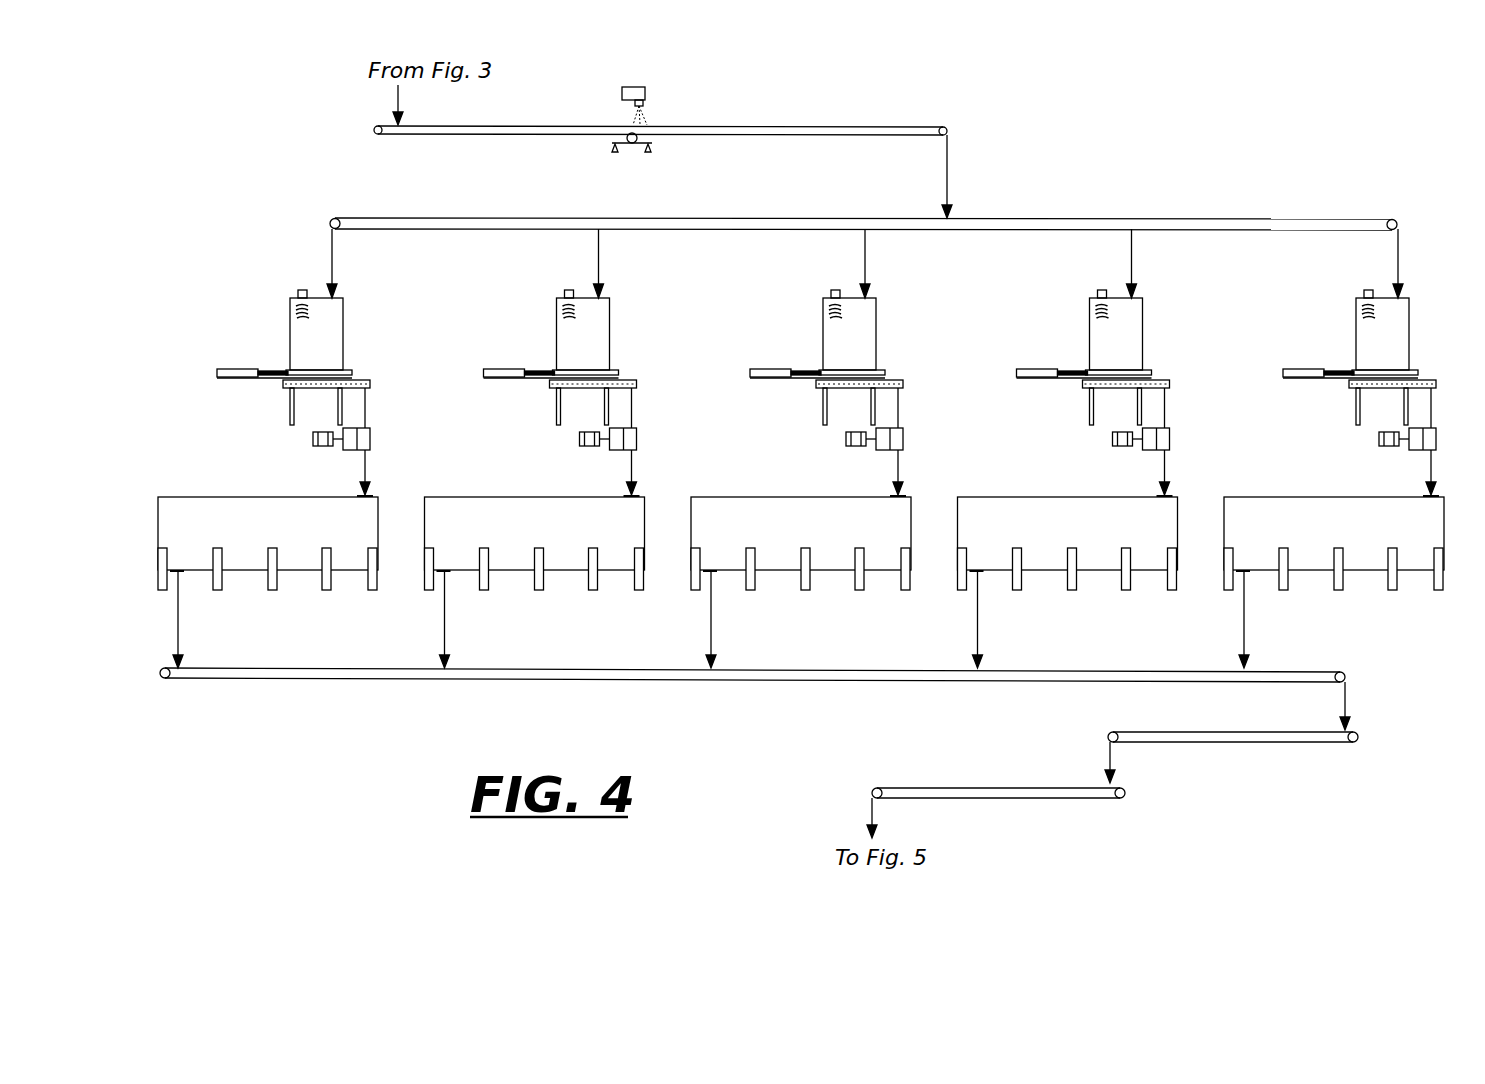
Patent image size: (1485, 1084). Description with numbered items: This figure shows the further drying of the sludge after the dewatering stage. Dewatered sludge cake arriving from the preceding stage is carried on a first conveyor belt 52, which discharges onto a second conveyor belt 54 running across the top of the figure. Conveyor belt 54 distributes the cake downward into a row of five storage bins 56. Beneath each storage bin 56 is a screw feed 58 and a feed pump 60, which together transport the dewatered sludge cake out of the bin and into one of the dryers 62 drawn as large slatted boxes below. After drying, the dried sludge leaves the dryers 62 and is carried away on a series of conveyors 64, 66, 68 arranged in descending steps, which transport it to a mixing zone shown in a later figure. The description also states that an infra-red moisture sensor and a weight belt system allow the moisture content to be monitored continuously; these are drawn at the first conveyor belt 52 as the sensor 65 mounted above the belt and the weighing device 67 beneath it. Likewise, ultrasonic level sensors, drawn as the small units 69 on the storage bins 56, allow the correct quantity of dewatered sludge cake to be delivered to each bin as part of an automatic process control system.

The conveyor belt 52 is at (890, 126).
The conveyor belt 54 is at (890, 222).
The storage bin 56 is at (343, 333).
The screw feed 58 is at (372, 382).
The feed pump 60 is at (372, 435).
The dryer 62 is at (227, 500).
The conveyor 64 is at (828, 676).
The spray nozzle 65 is at (645, 92).
The conveyor 66 is at (1230, 738).
The roller 67 is at (631, 148).
The conveyor 68 is at (1028, 790).
The sensor 69 is at (297, 292).